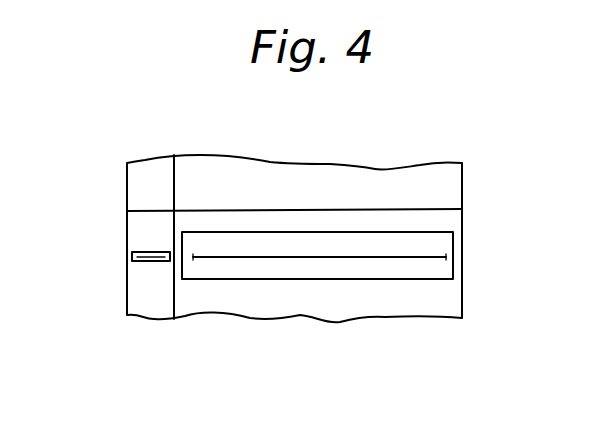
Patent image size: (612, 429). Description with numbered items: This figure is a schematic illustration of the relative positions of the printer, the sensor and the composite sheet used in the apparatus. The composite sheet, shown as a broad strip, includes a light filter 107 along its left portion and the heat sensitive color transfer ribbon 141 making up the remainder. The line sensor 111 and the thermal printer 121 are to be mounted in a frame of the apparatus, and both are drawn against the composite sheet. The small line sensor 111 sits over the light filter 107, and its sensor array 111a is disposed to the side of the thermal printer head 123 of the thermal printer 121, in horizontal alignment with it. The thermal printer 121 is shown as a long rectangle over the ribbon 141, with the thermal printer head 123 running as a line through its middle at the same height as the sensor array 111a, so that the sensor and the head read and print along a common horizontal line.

The light filter 107 is at (153, 155).
The heat sensitive color transfer ribbon 141 is at (327, 163).
The thermal printer 121 is at (430, 232).
The thermal printer head 123 is at (432, 255).
The line sensor 111 is at (131, 258).
The sensor array 111a is at (150, 251).